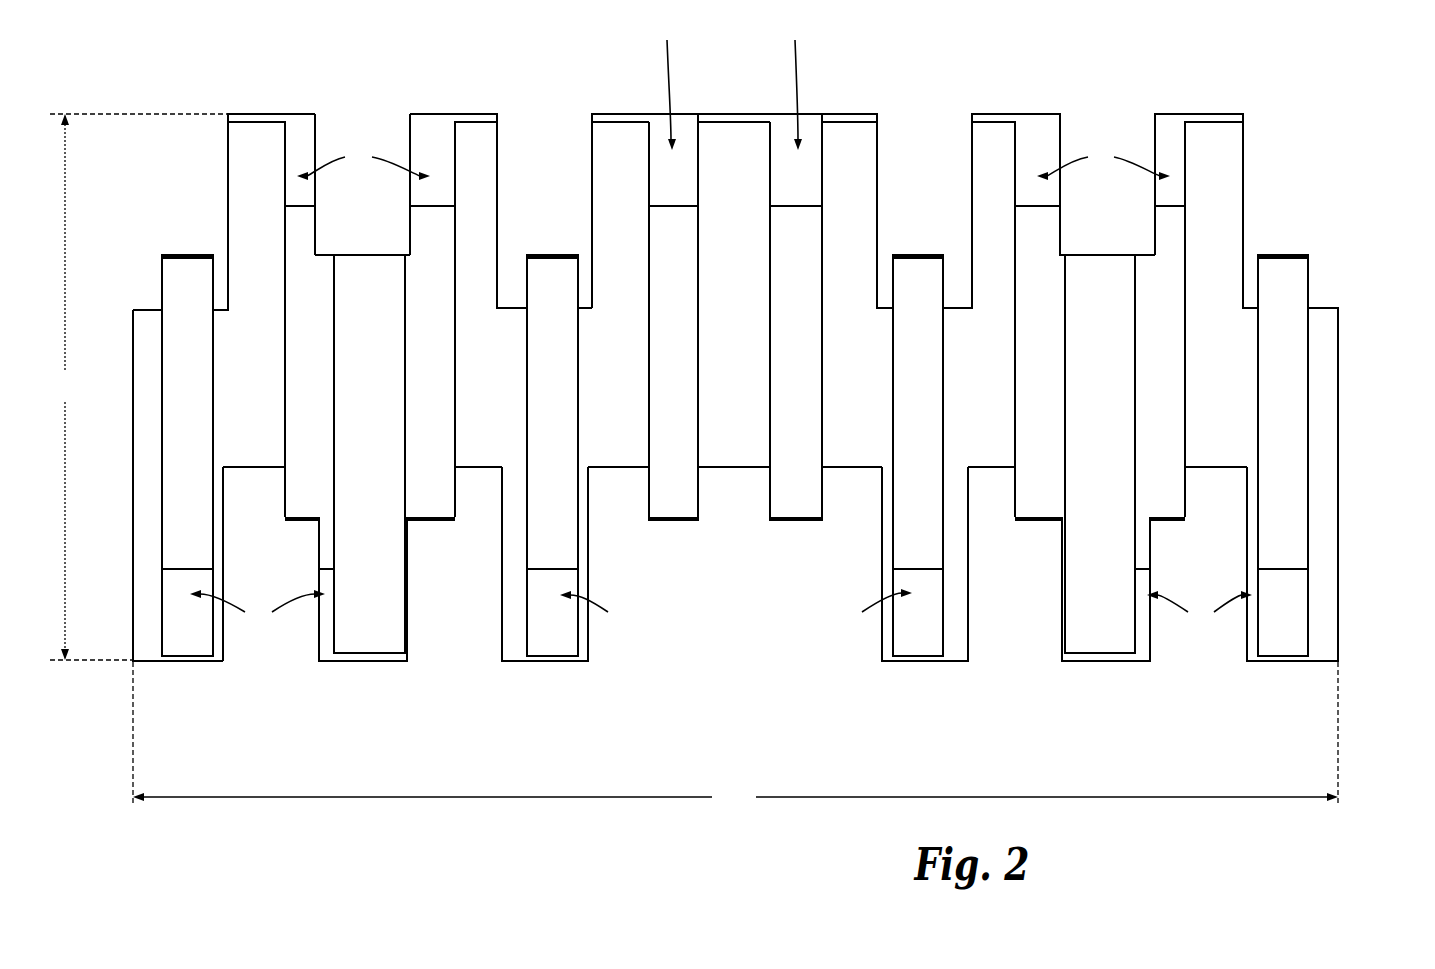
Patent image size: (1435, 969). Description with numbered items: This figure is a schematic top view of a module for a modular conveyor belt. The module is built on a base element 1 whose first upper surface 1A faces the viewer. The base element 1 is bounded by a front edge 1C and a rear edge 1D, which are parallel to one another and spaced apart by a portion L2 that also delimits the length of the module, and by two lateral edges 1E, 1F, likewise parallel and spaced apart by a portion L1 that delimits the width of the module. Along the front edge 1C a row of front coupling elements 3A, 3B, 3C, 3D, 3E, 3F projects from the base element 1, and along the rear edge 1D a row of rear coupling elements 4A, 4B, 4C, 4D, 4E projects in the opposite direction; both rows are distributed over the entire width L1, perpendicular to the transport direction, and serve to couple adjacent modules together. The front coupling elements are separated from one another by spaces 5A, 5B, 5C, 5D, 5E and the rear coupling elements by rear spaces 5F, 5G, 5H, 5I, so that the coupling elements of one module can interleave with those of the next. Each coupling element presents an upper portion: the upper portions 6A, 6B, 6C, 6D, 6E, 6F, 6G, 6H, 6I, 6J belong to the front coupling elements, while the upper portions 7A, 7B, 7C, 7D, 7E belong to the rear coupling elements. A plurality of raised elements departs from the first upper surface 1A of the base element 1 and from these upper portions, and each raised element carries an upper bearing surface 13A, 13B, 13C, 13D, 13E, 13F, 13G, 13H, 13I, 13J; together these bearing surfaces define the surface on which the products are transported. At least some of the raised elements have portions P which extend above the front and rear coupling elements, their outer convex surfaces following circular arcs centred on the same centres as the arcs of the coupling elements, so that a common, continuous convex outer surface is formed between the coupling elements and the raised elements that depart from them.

The base element 1 is at (747, 390).
The first upper surface 1A is at (1328, 344).
The front edge 1C is at (735, 489).
The rear edge 1D is at (513, 294).
The lateral edge 1E is at (120, 350).
The lateral edge 1F is at (1353, 444).
The front coupling element 3A is at (187, 679).
The front coupling element 3B is at (345, 679).
The front coupling element 3C is at (547, 679).
The front coupling element 3D is at (912, 679).
The front coupling element 3E is at (1093, 679).
The front coupling element 3F is at (1285, 679).
The rear coupling element 4A is at (283, 97).
The rear coupling element 4B is at (447, 97).
The rear coupling element 4C is at (725, 97).
The rear coupling element 4D is at (1023, 97).
The rear coupling element 4E is at (1188, 97).
The front space 5A is at (265, 661).
The front space 5B is at (443, 661).
The front space 5C is at (732, 638).
The front space 5D is at (1017, 666).
The crank pin region 5E is at (1189, 661).
The rear space 5F is at (1112, 114).
The rear space 5G is at (917, 114).
The rear space 5H is at (548, 114).
The rear space 5I is at (358, 114).
The upper portion 6A is at (1325, 640).
The upper portion 6B is at (1250, 642).
The upper portion 6C is at (1075, 640).
The upper portion 6D is at (963, 642).
The upper portion 6E is at (883, 642).
The upper portion 6F is at (585, 640).
The upper portion 6G is at (507, 640).
The upper portion 6H is at (380, 628).
The upper portion 6I is at (222, 640).
The upper portion 6J is at (147, 632).
The upper portion 7A is at (1213, 143).
The upper portion 7B is at (985, 143).
The upper portion 7C is at (847, 143).
The upper portion 7D is at (473, 143).
The upper portion 7E is at (238, 143).
The upper bearing surface 13A is at (165, 287).
The upper bearing surface 13B is at (317, 287).
The upper bearing surface 13C is at (428, 497).
The upper bearing surface 13D is at (553, 283).
The upper bearing surface 13E is at (668, 247).
The upper bearing surface 13F is at (800, 248).
The upper bearing surface 13G is at (912, 532).
The upper bearing surface 13H is at (1057, 288).
The upper bearing surface 13I is at (1180, 230).
The upper bearing surface 13J is at (1287, 518).
The portion of raised element P is at (721, 320).
The width portion L1 is at (735, 737).
The length portion L2 is at (139, 387).